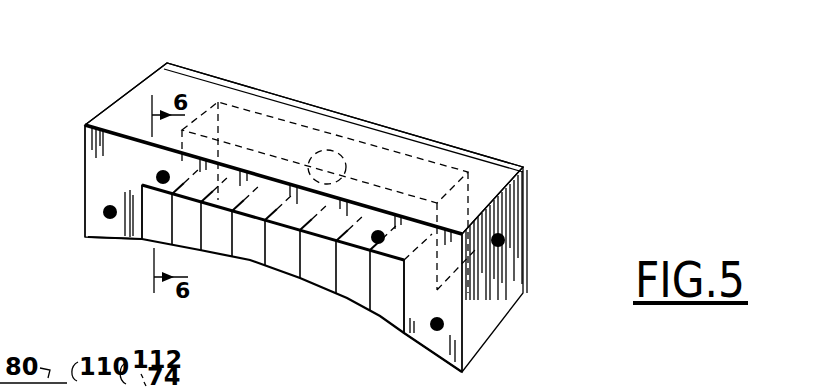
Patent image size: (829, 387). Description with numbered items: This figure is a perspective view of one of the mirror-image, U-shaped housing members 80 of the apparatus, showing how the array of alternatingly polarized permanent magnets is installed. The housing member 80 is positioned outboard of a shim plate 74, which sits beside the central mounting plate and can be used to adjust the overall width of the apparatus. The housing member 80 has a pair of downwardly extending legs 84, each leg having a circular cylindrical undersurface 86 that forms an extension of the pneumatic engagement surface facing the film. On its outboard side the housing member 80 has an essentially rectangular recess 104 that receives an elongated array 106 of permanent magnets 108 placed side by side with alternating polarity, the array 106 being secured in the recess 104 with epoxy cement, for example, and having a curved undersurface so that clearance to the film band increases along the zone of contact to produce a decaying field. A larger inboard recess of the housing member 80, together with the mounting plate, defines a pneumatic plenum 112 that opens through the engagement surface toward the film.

The shim plate 74 is at (527, 237).
The housing member 80 is at (203, 108).
The downwardly extending leg 84 is at (103, 178).
The circular cylindrical undersurface 86 is at (95, 240).
The outboard rectangular recess 104 is at (240, 236).
The array of alternatingly polarized permanent magnets 106 is at (273, 272).
The permanent magnet 108 is at (343, 298).
The pneumatic plenum 112 is at (245, 128).